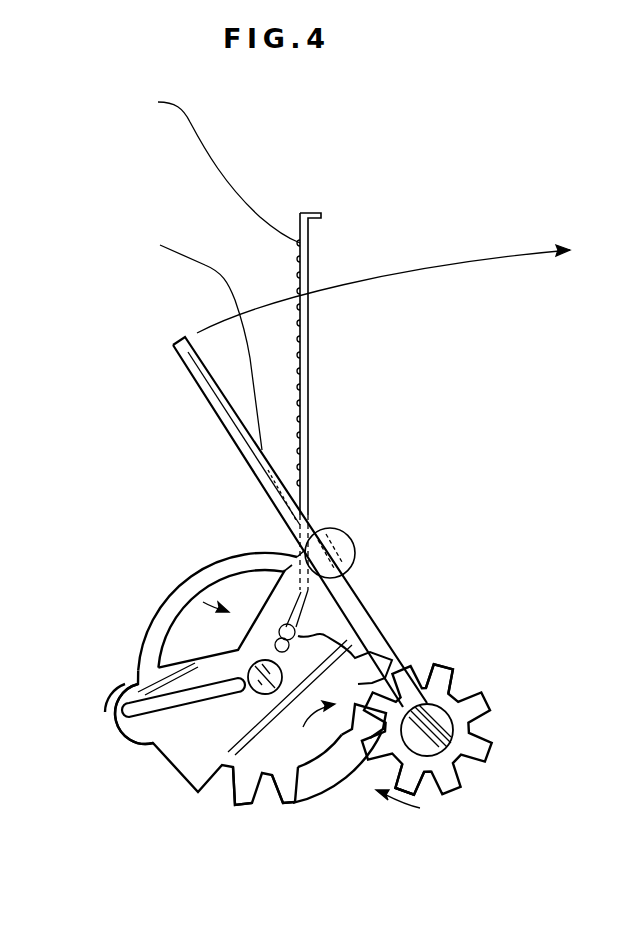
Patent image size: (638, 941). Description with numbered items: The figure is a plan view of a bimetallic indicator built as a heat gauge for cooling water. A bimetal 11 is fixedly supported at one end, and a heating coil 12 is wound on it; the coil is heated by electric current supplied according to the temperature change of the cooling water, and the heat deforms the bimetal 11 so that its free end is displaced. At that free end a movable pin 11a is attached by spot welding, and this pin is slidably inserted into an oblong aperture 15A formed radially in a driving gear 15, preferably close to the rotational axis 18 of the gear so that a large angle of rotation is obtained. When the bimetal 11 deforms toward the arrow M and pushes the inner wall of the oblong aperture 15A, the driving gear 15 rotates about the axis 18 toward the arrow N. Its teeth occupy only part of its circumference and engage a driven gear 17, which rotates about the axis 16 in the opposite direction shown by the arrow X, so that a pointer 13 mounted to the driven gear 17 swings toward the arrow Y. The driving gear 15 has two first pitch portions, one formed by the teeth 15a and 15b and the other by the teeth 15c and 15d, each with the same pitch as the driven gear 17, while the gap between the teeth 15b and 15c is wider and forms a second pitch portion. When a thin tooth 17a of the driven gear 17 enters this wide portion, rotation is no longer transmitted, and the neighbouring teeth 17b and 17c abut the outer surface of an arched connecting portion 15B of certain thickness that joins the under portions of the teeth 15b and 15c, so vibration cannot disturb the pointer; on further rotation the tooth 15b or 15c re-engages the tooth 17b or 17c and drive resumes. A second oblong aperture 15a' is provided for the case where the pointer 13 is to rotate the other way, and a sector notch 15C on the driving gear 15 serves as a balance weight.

The bimetal 11 is at (316, 209).
The movable pin 11a is at (298, 632).
The heating coil 12 is at (309, 267).
The pointer 13 is at (186, 393).
The driving gear 15 is at (256, 693).
The oblong aperture 15A is at (292, 636).
The connecting portion 15B is at (335, 800).
The sector notch 15C is at (139, 664).
The tooth 15a is at (380, 651).
The oblong aperture 15a' is at (87, 724).
The tooth 15b is at (353, 744).
The tooth 15c is at (288, 805).
The tooth 15d is at (237, 808).
The axis 16 is at (438, 730).
The driven gear 17 is at (463, 769).
The tooth 17a is at (431, 784).
The tooth 17b is at (432, 682).
The tooth 17c is at (420, 790).
The axis 18 is at (262, 688).
The arrow M is at (232, 613).
The arrow N is at (303, 740).
The arrow X is at (403, 813).
The arrow Y is at (513, 257).